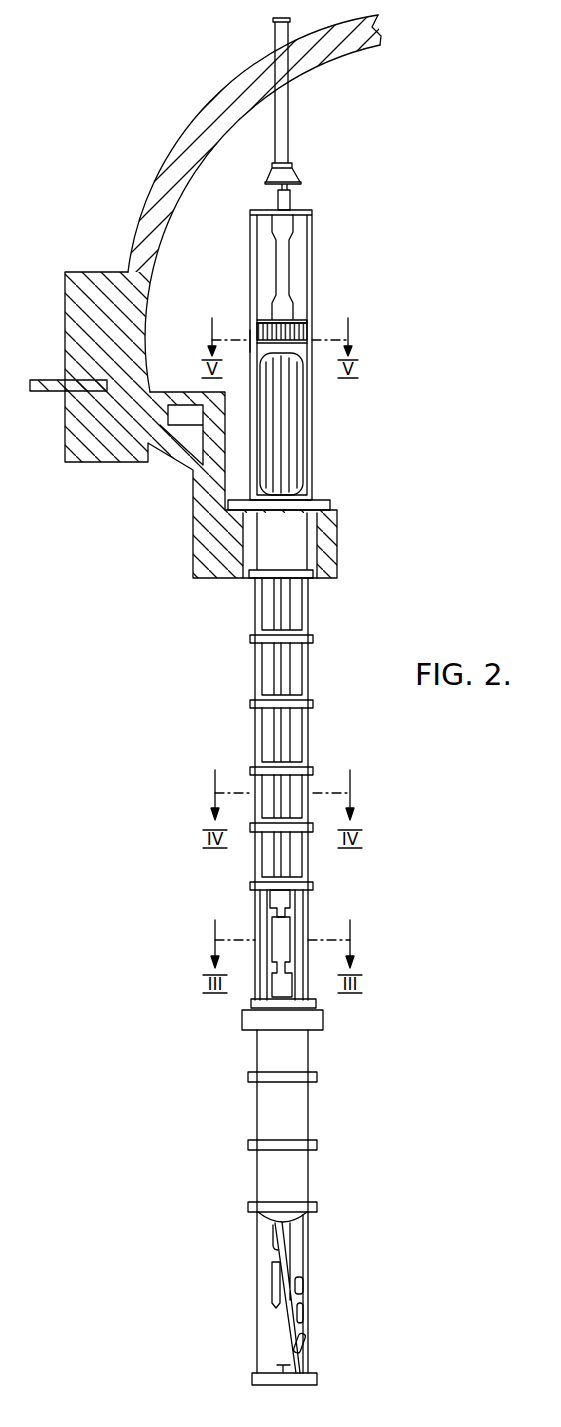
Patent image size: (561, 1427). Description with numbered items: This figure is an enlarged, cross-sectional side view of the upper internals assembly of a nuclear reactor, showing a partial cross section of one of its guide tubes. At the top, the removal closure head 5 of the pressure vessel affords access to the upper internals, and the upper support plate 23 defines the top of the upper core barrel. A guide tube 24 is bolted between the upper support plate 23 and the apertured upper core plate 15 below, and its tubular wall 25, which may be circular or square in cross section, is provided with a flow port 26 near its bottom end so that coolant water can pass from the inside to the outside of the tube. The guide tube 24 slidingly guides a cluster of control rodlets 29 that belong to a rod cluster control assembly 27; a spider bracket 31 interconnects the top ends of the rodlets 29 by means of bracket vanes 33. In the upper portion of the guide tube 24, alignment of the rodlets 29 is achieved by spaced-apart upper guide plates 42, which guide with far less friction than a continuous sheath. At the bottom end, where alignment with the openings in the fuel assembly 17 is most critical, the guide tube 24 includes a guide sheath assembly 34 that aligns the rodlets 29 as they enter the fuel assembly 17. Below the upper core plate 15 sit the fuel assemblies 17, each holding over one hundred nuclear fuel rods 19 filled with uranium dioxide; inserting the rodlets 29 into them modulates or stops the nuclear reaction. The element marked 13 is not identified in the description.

The removal closure head 5 is at (189, 157).
The end plate 13 is at (318, 1378).
The upper core plate 15 is at (323, 1013).
The nuclear fuel assembly 17 is at (313, 1259).
The nuclear fuel rod 19 is at (293, 1297).
The upper support plate 23 is at (167, 392).
The guide tube 24 is at (313, 623).
The tubular wall 25 is at (308, 730).
The flow port 26 is at (282, 932).
The rod cluster control assembly 27 is at (300, 176).
The control rodlet 29 is at (297, 433).
The spider bracket 31 is at (293, 318).
The bracket vane 33 is at (305, 322).
The guide sheath assembly 34 is at (297, 940).
The upper guide plate 42 is at (249, 340).